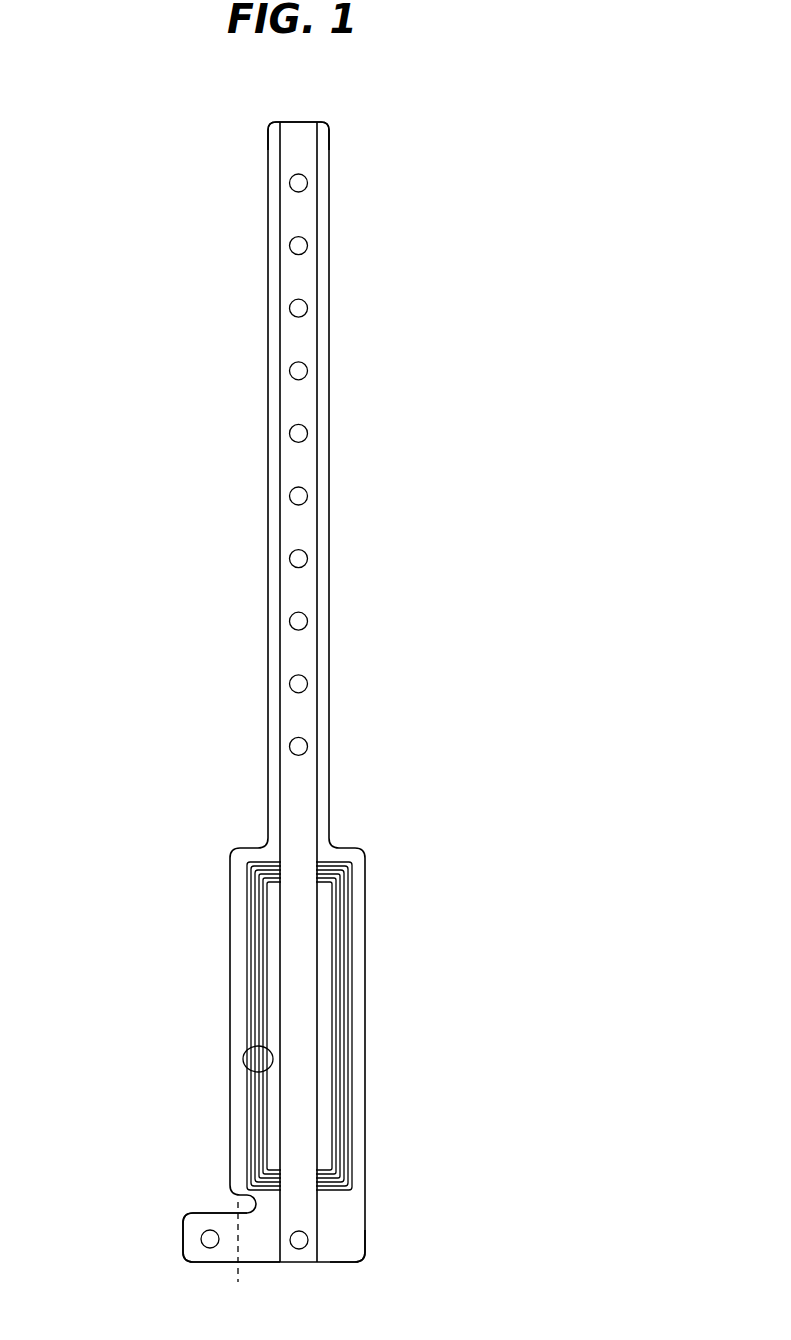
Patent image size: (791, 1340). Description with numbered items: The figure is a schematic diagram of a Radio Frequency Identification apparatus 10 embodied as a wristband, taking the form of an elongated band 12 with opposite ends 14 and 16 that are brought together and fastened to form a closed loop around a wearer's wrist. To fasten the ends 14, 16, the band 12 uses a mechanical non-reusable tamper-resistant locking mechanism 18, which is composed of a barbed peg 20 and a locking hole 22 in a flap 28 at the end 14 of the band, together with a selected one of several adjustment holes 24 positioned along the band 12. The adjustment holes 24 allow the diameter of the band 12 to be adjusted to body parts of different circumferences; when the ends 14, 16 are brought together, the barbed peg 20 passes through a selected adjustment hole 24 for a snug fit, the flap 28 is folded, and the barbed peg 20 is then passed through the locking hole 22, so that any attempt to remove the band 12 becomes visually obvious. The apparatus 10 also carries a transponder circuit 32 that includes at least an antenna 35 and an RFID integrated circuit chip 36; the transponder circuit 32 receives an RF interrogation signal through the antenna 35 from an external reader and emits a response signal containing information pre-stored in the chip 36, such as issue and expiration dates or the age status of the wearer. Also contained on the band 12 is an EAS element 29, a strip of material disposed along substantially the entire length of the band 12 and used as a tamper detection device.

The RFID apparatus 10 is at (145, 538).
The elongated band 12 is at (330, 824).
The end 14 is at (357, 1277).
The end 16 is at (253, 133).
The locking mechanism 18 is at (192, 1273).
The barbed peg 20 is at (201, 1239).
The locking hole 22 is at (299, 1249).
The adjustment holes 24 is at (290, 434).
The flap 28 is at (235, 1245).
The EAS element 29 is at (305, 779).
The transponder circuit 32 is at (232, 1027).
The antenna 35 is at (222, 1039).
The RFID integrated circuit chip 36 is at (268, 989).